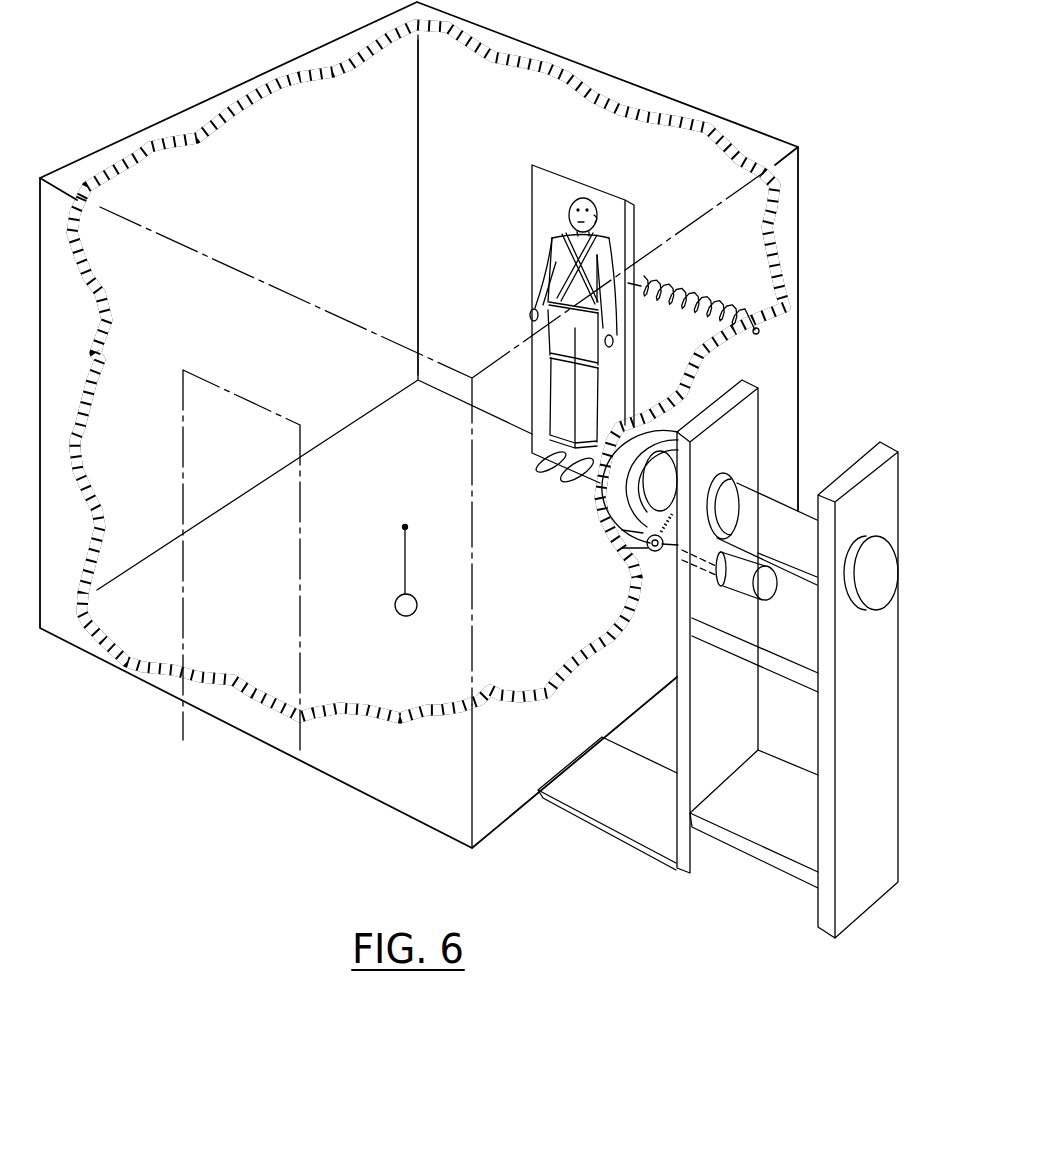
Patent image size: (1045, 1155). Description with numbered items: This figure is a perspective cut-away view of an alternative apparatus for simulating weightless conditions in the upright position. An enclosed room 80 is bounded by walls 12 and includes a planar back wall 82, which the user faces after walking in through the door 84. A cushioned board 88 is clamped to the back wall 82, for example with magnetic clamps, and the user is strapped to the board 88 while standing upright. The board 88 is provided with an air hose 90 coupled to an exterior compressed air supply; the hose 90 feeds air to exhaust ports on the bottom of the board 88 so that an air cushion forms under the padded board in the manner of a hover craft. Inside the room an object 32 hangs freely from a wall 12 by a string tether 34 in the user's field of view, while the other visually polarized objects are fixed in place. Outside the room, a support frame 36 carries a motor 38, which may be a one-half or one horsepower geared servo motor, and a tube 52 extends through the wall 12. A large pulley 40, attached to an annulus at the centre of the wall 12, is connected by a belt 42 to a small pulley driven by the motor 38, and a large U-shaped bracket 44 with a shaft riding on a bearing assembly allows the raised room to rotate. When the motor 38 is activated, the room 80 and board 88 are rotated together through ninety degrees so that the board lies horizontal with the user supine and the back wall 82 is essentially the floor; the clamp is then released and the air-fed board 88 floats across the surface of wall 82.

The enclosed room 80 is at (748, 106).
The planar back wall 82 is at (480, 158).
The walls 12 is at (77, 336).
The cushioned board 88 is at (582, 178).
The air hose 90 is at (703, 300).
The large pulley 40 is at (679, 418).
The belt 42 is at (637, 537).
The tube 52 is at (783, 520).
The motor 38 is at (740, 580).
The support frame 36 is at (768, 857).
The U-shaped bracket 44 is at (597, 823).
The string tether 34 is at (403, 554).
The object 32 is at (405, 617).
The door 84 is at (203, 645).